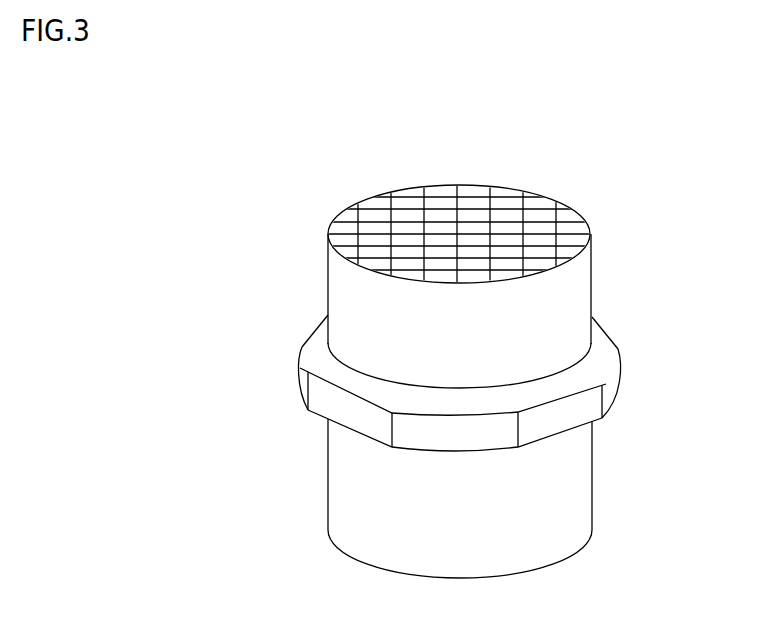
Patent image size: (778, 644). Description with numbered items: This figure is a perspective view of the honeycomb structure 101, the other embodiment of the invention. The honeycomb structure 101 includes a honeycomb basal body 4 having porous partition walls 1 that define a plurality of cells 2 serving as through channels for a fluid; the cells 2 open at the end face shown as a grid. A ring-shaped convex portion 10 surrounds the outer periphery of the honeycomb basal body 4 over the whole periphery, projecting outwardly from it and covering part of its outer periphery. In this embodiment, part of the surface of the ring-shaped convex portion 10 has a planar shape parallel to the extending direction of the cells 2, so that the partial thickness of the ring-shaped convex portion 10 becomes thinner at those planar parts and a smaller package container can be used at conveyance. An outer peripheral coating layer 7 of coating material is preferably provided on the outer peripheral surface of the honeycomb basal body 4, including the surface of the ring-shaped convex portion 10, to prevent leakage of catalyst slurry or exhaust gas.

The honeycomb structure 101 is at (697, 78).
The partition walls 1 is at (421, 206).
The cells 2 is at (479, 197).
The honeycomb basal body 4 is at (542, 202).
The outer peripheral coating layer 7 is at (338, 303).
The ring-shaped convex portion 10 is at (624, 387).